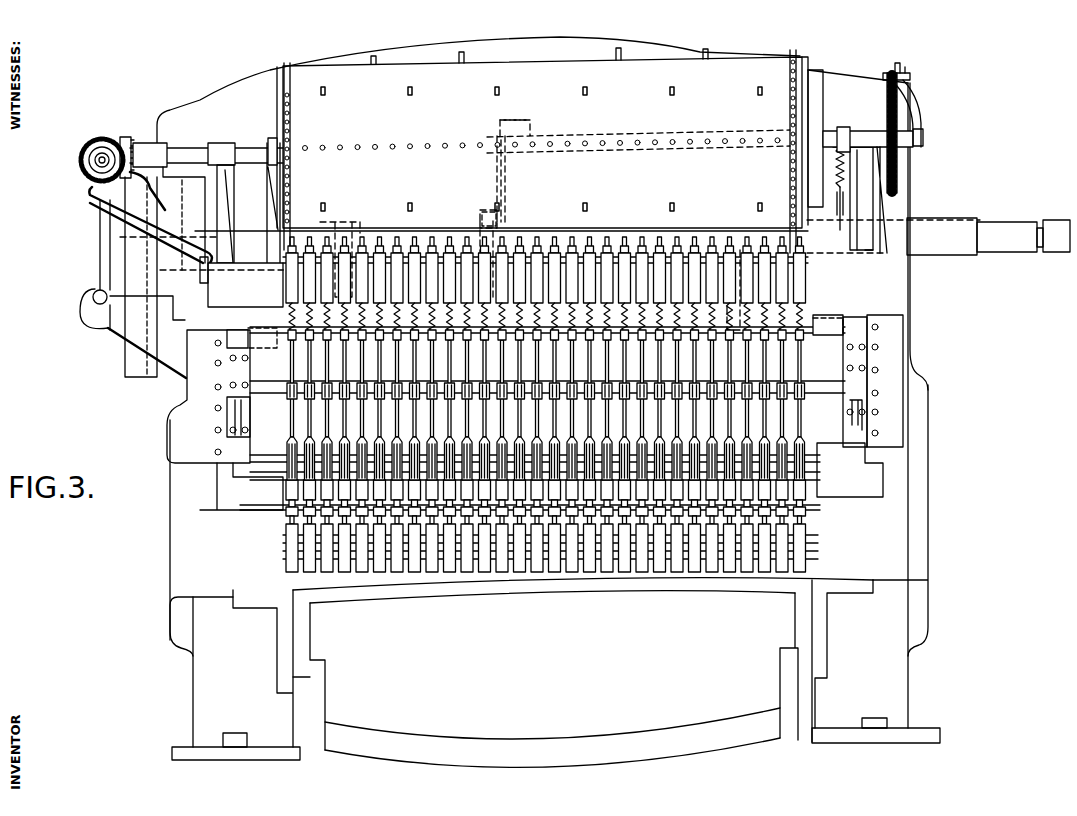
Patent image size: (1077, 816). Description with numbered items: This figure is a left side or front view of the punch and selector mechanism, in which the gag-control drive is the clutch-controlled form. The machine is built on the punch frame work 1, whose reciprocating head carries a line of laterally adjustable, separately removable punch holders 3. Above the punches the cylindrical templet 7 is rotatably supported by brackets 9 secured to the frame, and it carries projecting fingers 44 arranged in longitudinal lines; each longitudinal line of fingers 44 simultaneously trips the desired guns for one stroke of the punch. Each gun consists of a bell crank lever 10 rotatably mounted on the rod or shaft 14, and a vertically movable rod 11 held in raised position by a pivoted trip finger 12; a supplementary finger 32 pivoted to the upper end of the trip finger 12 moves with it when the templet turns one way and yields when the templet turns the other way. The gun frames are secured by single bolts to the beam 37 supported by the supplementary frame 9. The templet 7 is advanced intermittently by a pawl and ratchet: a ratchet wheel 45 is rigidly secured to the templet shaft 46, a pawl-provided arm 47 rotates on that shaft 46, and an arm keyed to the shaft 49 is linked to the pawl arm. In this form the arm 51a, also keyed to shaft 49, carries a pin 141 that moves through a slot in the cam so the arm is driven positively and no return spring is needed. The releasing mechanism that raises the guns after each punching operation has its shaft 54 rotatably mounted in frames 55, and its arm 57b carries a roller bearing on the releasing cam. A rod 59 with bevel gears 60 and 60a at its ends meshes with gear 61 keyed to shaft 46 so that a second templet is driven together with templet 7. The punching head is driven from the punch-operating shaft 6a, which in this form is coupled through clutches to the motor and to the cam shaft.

The punch frame work 1 is at (200, 683).
The punch holders 3 is at (332, 495).
The punch-operating shaft 6a is at (962, 221).
The templet 7 is at (388, 76).
The brackets 9 is at (544, 203).
The bell crank lever 10 is at (328, 423).
The vertically movable rod 11 is at (767, 367).
The trip finger 12 is at (767, 276).
The rod or shaft 14 is at (823, 382).
The supplementary finger 32 is at (542, 235).
The beam 37 is at (241, 282).
The fingers 44 is at (465, 57).
The ratchet wheel 45 is at (895, 177).
The shaft 46 is at (925, 133).
The pawl-provided arm 47 is at (903, 103).
The shaft 49 is at (631, 137).
The arm 51a is at (505, 186).
The shaft 54 is at (258, 360).
The frames 55 is at (230, 347).
The arm 57b is at (820, 305).
The rod 59 is at (100, 225).
The bevel gear 60 is at (80, 159).
The bevel gear 60a is at (80, 315).
The bevel gear 61 is at (125, 128).
The pin 141 is at (480, 213).